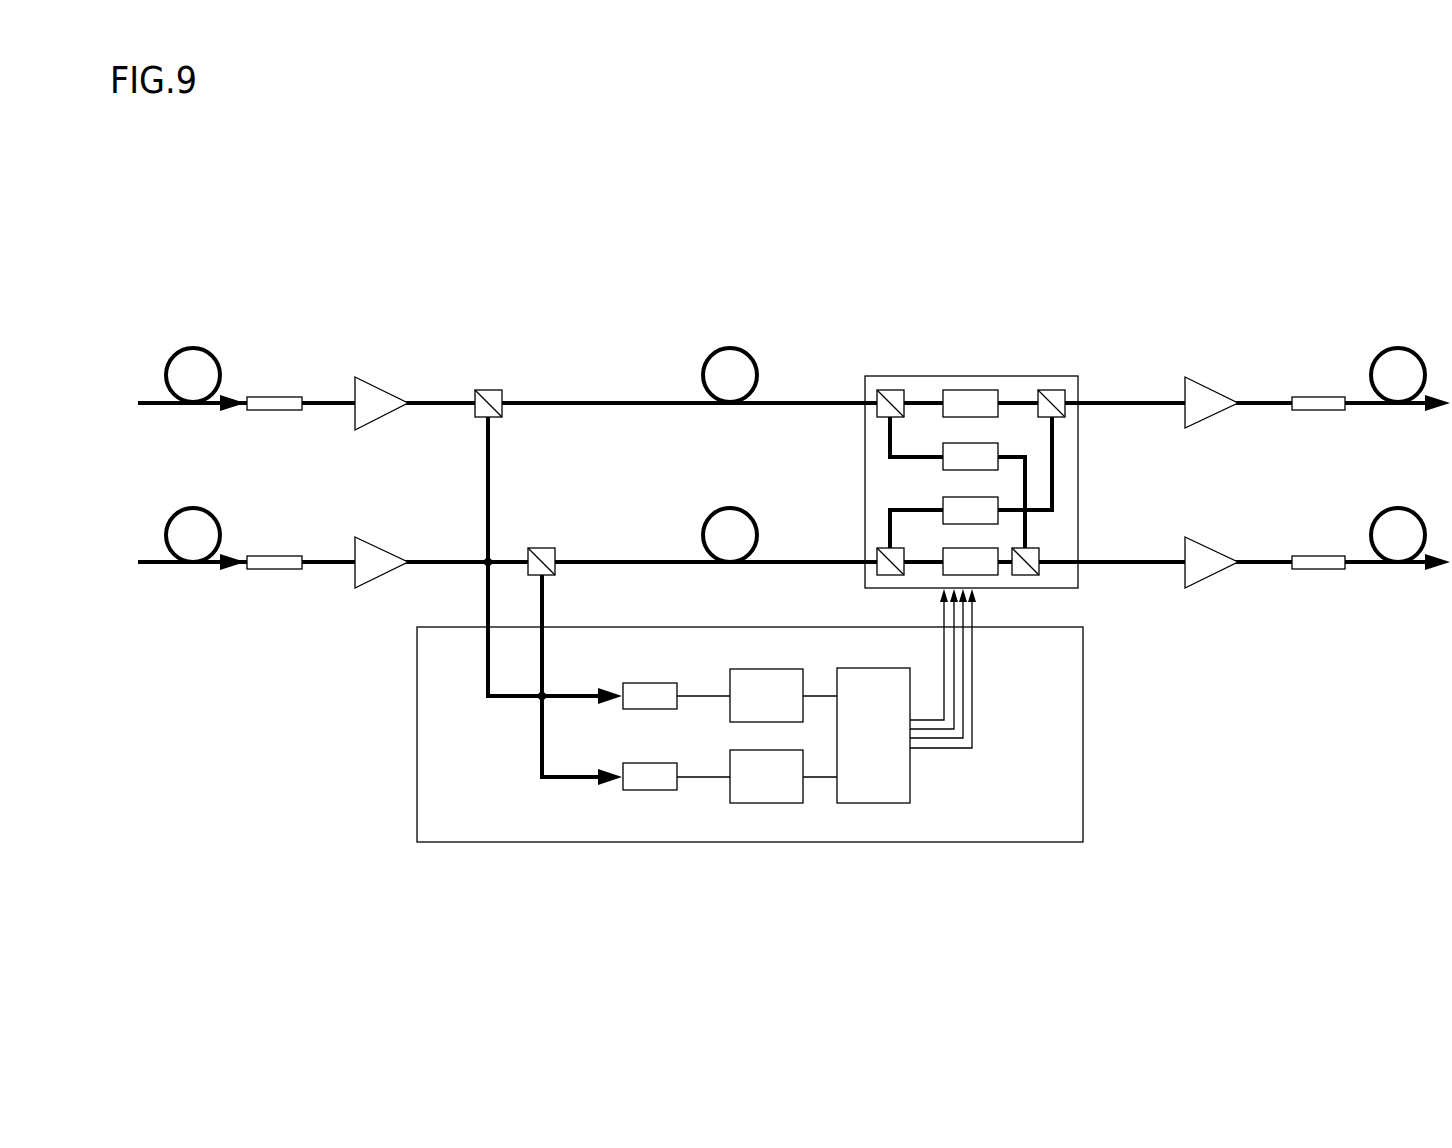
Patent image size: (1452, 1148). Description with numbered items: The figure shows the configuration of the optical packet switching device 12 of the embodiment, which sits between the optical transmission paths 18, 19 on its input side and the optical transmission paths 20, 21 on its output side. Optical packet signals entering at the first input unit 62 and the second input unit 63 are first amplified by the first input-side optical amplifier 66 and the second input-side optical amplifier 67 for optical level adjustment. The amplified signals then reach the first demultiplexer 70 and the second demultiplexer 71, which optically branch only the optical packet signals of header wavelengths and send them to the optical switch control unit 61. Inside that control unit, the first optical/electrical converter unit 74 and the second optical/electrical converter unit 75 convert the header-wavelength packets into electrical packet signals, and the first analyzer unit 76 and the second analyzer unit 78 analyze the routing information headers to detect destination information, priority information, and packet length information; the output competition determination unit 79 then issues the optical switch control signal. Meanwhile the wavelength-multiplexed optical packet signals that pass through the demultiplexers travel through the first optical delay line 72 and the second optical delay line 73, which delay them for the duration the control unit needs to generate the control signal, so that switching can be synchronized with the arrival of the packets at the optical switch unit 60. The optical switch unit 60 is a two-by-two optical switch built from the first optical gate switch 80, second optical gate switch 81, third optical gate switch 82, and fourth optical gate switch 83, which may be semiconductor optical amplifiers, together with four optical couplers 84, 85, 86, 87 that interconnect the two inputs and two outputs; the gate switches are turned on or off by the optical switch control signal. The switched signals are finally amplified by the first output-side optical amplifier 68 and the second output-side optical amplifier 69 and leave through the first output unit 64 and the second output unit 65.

The optical packet switching device 12 is at (634, 286).
The first optical transmission path 18 is at (219, 372).
The second optical transmission path 19 is at (219, 531).
The third optical transmission path 20 is at (1409, 350).
The fourth optical transmission path 21 is at (1417, 511).
The optical switch unit 60 is at (974, 476).
The optical switch control unit 61 is at (750, 739).
The first input unit 62 is at (279, 412).
The second input unit 63 is at (279, 571).
The first output unit 64 is at (1313, 397).
The second output unit 65 is at (1313, 556).
The first input-side optical amplifier 66 is at (384, 391).
The second input-side optical amplifier 67 is at (384, 551).
The first output-side optical amplifier 68 is at (1212, 388).
The second output-side optical amplifier 69 is at (1212, 550).
The first demultiplexer 70 is at (496, 390).
The second demultiplexer 71 is at (548, 548).
The first optical delay line 72 is at (742, 350).
The second optical delay line 73 is at (740, 509).
The first optical/electrical converter unit 74 is at (648, 683).
The second optical/electrical converter unit 75 is at (641, 792).
The first analyzer unit 76 is at (770, 668).
The second analyzer unit 78 is at (768, 804).
The output competition determination unit 79 is at (873, 668).
The first optical gate switch 80 is at (962, 390).
The second optical gate switch 81 is at (962, 470).
The third optical gate switch 82 is at (957, 524).
The fourth optical gate switch 83 is at (979, 578).
The optical coupler 84 is at (884, 389).
The optical coupler 85 is at (875, 577).
The optical coupler 86 is at (1055, 390).
The optical coupler 87 is at (1026, 577).